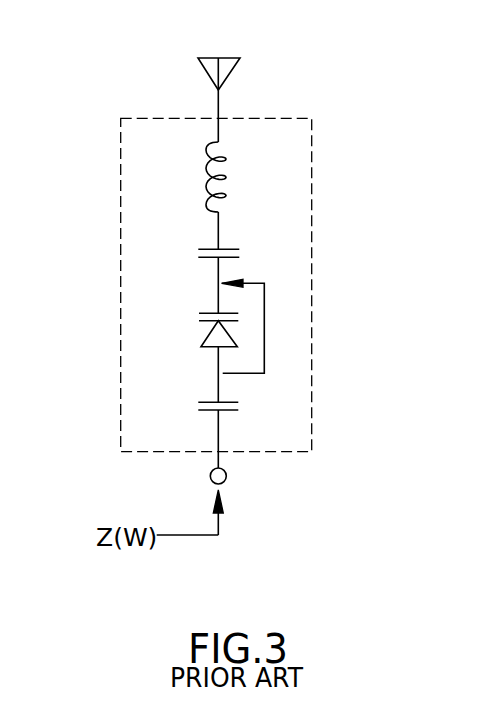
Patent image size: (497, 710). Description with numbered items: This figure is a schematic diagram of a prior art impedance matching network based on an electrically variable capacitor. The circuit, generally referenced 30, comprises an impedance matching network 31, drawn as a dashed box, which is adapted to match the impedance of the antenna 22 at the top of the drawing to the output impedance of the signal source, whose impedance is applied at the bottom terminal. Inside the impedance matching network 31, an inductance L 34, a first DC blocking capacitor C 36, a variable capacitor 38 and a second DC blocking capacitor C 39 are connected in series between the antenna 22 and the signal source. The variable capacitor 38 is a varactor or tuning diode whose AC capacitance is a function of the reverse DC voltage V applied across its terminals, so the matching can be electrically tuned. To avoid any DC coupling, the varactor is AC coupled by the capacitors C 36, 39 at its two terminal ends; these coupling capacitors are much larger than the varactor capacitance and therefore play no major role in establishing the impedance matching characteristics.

The antenna 22 is at (230, 75).
The circuit 30 is at (378, 512).
The impedance matching network 31 is at (312, 248).
The inductance L 34 is at (225, 168).
The DC blocking capacitor C 36 is at (233, 247).
The variable capacitor C(V) 38 is at (210, 311).
The DC blocking capacitor C 39 is at (237, 401).